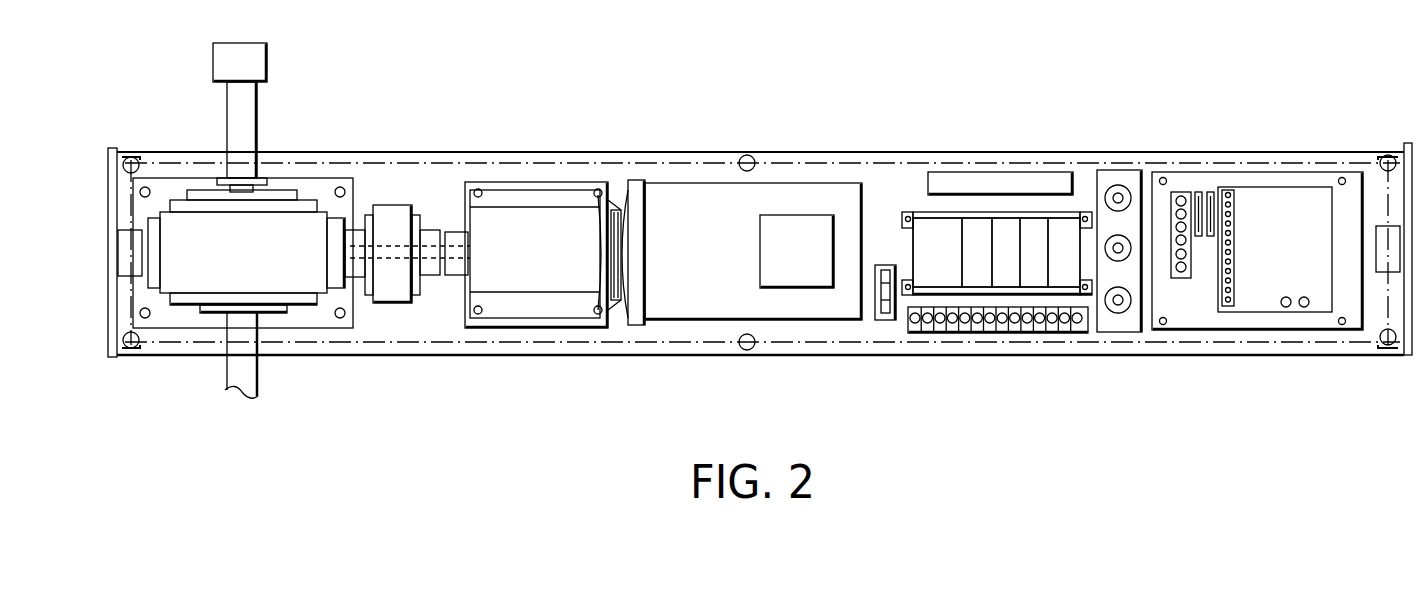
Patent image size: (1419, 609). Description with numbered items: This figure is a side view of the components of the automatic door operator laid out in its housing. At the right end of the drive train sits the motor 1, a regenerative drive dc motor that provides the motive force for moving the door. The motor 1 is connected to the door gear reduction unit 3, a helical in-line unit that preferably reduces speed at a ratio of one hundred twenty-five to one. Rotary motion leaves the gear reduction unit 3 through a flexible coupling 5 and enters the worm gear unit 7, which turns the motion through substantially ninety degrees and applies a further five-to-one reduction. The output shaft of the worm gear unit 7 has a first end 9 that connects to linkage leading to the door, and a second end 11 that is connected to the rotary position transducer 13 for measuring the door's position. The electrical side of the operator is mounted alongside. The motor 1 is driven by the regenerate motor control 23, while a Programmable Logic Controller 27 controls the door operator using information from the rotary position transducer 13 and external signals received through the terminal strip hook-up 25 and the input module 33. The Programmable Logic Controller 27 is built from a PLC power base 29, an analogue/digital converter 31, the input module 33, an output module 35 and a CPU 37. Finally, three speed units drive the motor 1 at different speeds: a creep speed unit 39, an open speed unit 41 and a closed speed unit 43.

The motor 1 is at (700, 258).
The door gear reduction unit 3 is at (512, 262).
The flexible coupling 5 is at (392, 205).
The worm gear unit 7 is at (207, 262).
The first end 9 is at (238, 377).
The second end 11 is at (238, 178).
The rotary position transducer 13 is at (243, 55).
The regenerate motor control 23 is at (1260, 275).
The terminal strip hook-up 25 is at (946, 332).
The Programmable Logic Controller 27 is at (1076, 297).
The PLC power base 29 is at (927, 212).
The analogue/digital converter 31 is at (998, 212).
The input module 33 is at (1027, 212).
The output module 35 is at (1055, 212).
The CPU 37 is at (968, 212).
The creep speed unit 39 is at (1115, 185).
The open speed unit 41 is at (1132, 248).
The closed speed unit 43 is at (1130, 310).